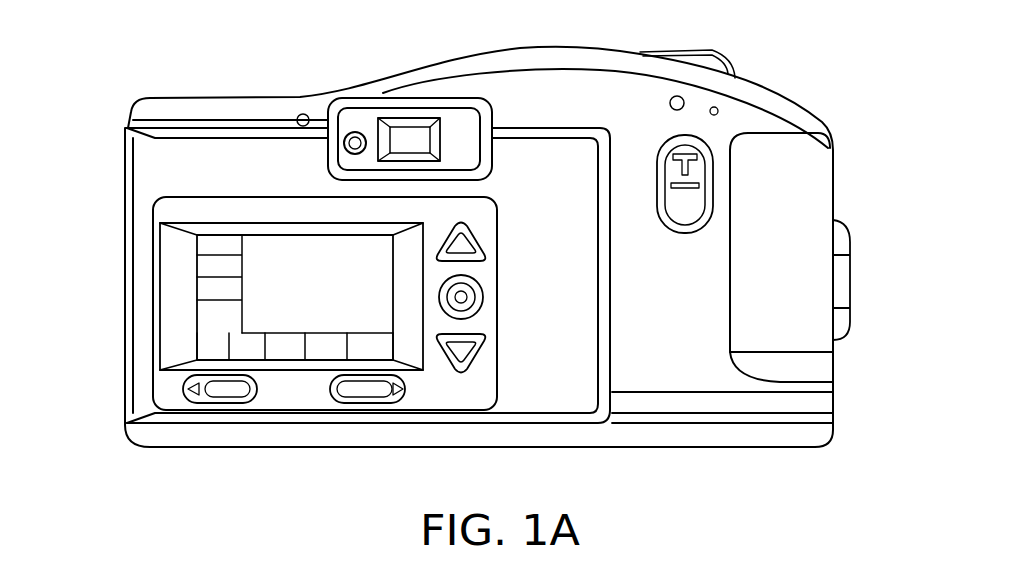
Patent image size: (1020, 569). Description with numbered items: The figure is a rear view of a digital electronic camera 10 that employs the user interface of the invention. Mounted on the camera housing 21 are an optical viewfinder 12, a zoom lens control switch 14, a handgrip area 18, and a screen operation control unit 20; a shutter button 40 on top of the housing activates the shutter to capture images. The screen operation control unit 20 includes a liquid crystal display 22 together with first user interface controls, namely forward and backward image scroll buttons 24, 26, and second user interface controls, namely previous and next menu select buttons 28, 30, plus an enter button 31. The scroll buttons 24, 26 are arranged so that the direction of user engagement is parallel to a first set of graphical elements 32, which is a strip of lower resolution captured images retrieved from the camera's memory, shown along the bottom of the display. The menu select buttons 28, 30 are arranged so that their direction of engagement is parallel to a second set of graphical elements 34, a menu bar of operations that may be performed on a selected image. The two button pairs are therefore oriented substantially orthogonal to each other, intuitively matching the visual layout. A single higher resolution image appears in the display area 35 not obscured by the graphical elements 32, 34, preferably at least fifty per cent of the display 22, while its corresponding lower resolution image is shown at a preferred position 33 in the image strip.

The camera 10 is at (117, 142).
The optical viewfinder 12 is at (409, 138).
The zoom lens control switch 14 is at (677, 150).
The handgrip area 18 is at (845, 195).
The screen operation control unit 20 is at (245, 208).
The camera housing 21 is at (688, 372).
The liquid crystal display 22 is at (288, 363).
The forward image scroll button 24 is at (222, 398).
The backward image scroll button 26 is at (370, 400).
The previous menu select button 28 is at (462, 245).
The next menu select button 30 is at (468, 352).
The enter button 31 is at (478, 312).
The first set of graphical elements 32 is at (337, 340).
The preferred position 33 is at (287, 338).
The second set of graphical elements 34 is at (244, 297).
The display area 35 is at (353, 280).
The shutter button 40 is at (700, 48).